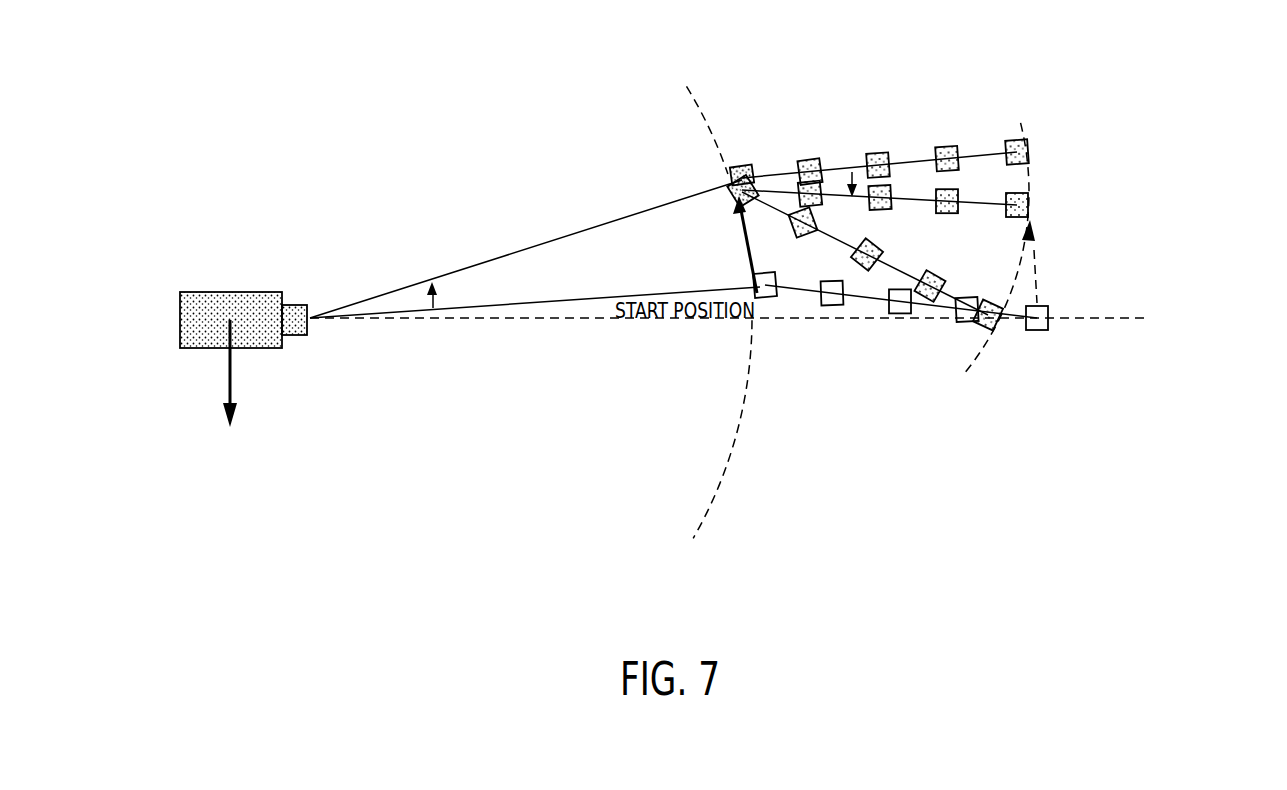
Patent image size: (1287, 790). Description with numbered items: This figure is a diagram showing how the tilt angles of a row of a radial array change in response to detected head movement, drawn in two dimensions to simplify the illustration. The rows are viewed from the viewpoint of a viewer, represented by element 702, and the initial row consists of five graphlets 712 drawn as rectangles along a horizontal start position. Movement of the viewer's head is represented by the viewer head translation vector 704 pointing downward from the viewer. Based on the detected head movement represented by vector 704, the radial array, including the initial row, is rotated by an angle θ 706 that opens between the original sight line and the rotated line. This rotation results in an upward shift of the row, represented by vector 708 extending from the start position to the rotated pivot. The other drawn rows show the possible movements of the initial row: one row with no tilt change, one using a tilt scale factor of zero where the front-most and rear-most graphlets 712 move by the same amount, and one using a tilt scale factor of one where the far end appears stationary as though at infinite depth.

The viewer 702 is at (240, 291).
The viewer head translation vector 704 is at (223, 382).
The angle θ 706 is at (437, 304).
The vector 708 is at (743, 232).
The graphlets 712 is at (826, 306).